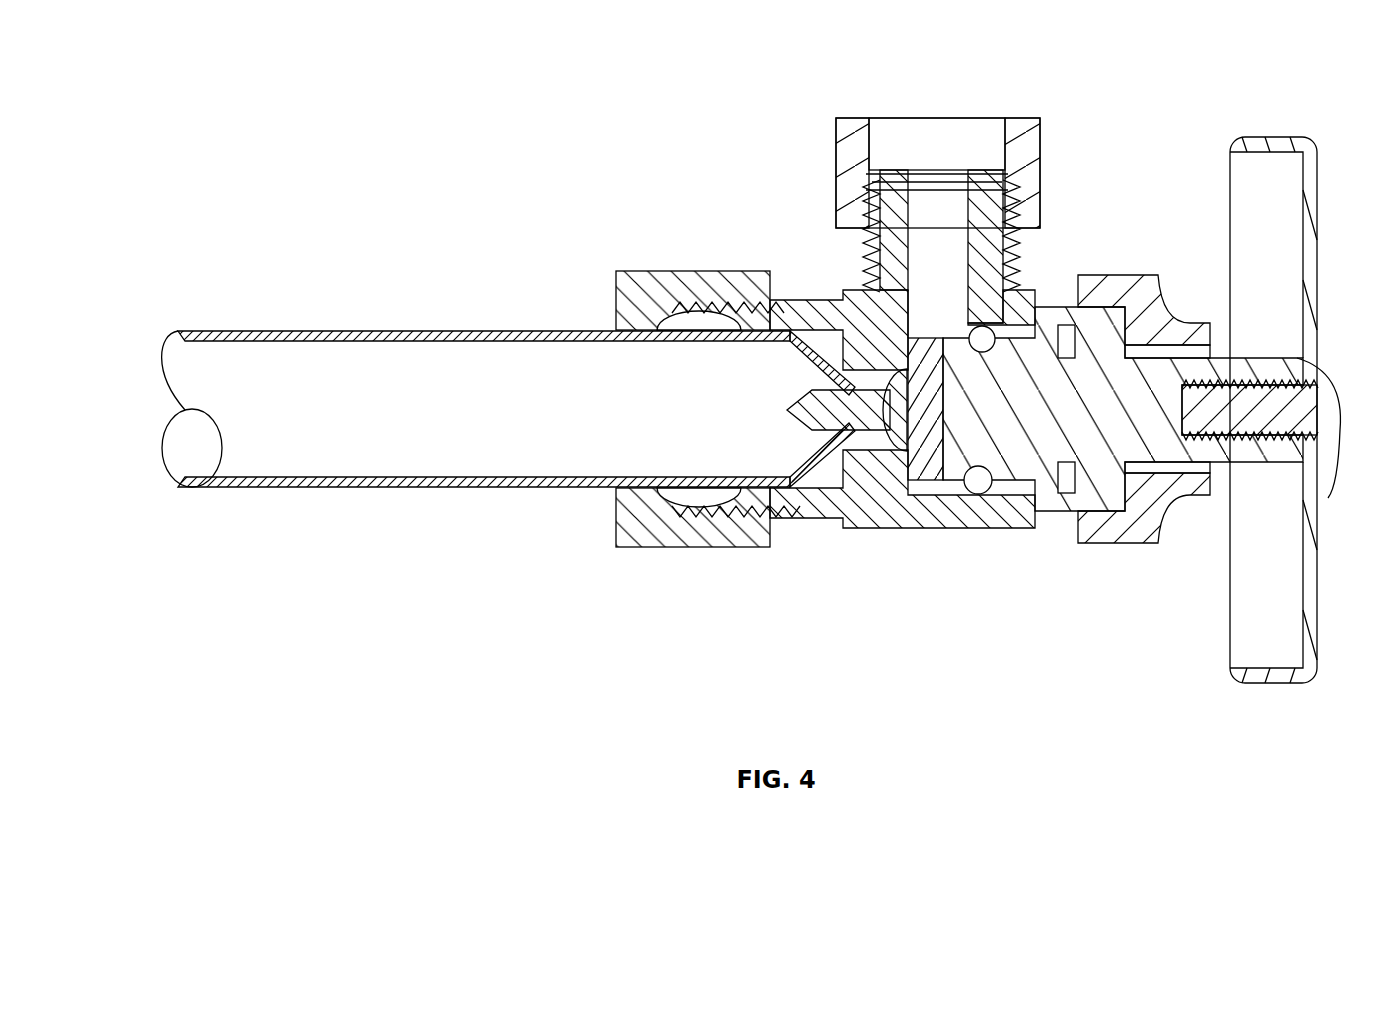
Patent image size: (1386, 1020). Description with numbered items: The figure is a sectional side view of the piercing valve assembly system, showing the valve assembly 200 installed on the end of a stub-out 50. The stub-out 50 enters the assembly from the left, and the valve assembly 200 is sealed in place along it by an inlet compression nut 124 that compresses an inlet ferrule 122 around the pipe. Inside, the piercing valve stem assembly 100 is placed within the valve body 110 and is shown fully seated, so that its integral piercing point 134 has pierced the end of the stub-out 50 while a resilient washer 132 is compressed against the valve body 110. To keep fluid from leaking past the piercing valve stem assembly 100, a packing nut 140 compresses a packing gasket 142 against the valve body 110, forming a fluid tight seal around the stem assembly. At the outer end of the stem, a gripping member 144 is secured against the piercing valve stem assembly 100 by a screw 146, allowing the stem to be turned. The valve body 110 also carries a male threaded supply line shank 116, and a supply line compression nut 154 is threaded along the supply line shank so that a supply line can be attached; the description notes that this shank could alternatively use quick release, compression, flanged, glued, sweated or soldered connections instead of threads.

The stub-out 50 is at (318, 330).
The piercing valve stem assembly 100 is at (1152, 357).
The valve body 110 is at (990, 520).
The male threaded supply line shank 116 is at (862, 275).
The inlet ferrule 122 is at (657, 495).
The inlet compression nut 124 is at (650, 270).
The resilient washer 132 is at (918, 493).
The piercing point 134 is at (795, 398).
The packing nut 140 is at (1103, 548).
The packing gasket 142 is at (1130, 545).
The gripping member 144 is at (1255, 145).
The screw 146 is at (1320, 440).
The supply line compression nut 154 is at (853, 115).
The valve assembly 200 is at (528, 105).